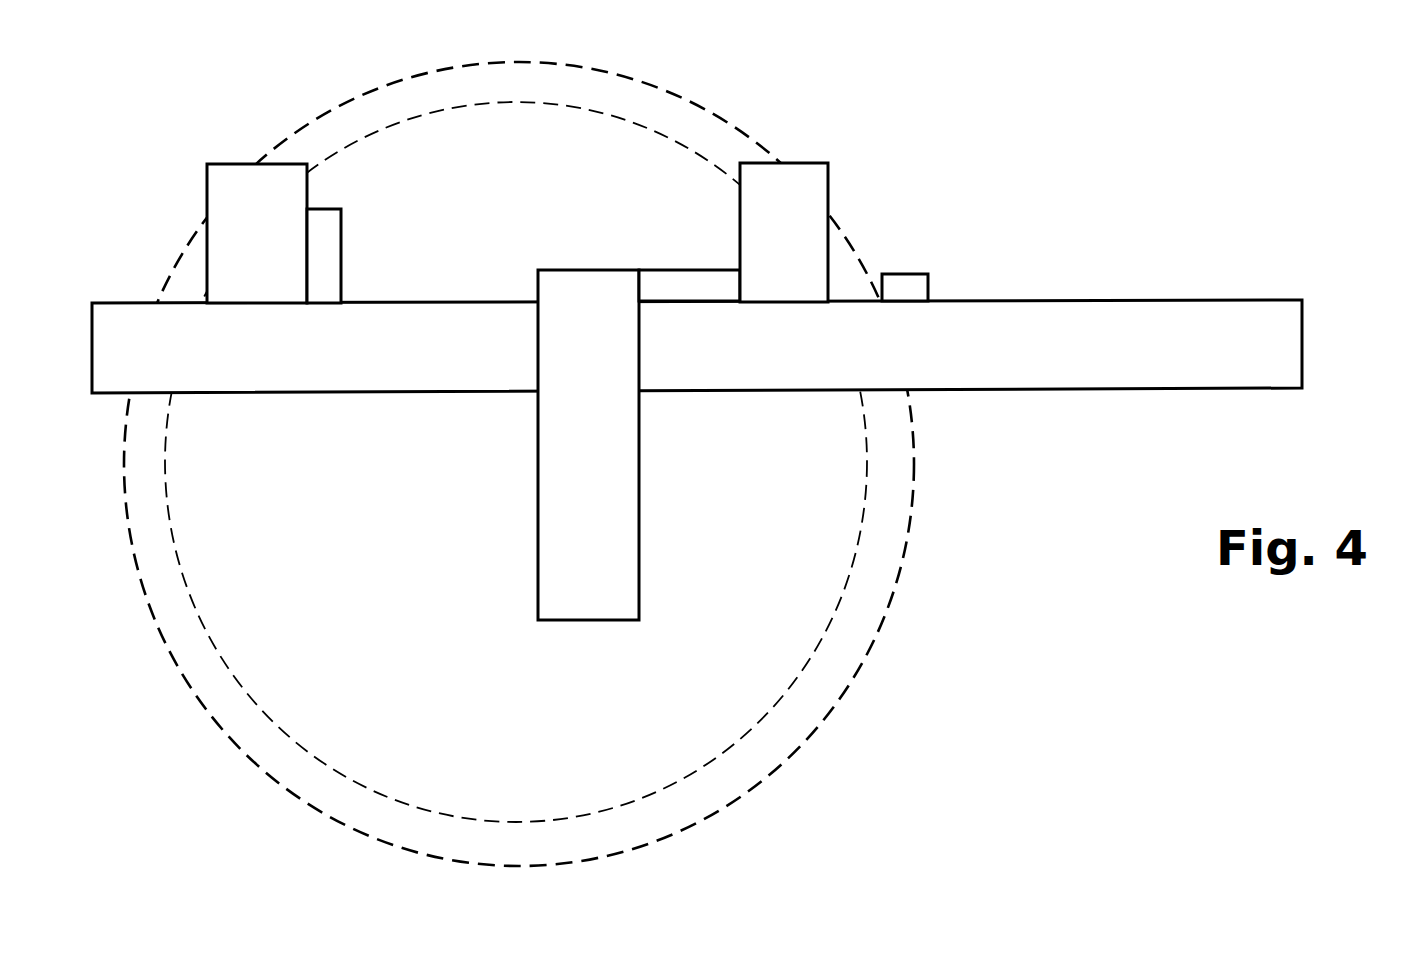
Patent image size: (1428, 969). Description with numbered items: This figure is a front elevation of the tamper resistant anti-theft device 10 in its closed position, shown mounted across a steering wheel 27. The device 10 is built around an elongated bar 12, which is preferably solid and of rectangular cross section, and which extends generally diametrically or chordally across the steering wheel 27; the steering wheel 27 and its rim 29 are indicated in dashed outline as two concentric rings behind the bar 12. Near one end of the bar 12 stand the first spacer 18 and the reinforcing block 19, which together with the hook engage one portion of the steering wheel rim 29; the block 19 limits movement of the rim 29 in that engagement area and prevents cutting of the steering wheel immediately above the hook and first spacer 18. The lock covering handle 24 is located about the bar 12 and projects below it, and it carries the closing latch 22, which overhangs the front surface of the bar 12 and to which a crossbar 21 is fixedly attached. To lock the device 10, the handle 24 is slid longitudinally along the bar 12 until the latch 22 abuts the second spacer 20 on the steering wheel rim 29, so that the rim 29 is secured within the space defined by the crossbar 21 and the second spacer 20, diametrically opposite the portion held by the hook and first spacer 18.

The tamper resistant anti-theft device 10 is at (1105, 250).
The elongated bar 12 is at (1303, 360).
The first spacer 18 is at (343, 242).
The block 19 is at (252, 165).
The second spacer 20 is at (930, 275).
The crossbar 21 is at (805, 163).
The closing latch 22 is at (682, 270).
The lock covering handle 24 is at (538, 486).
The steering wheel 27 is at (884, 558).
The steering wheel rim 29 is at (912, 455).